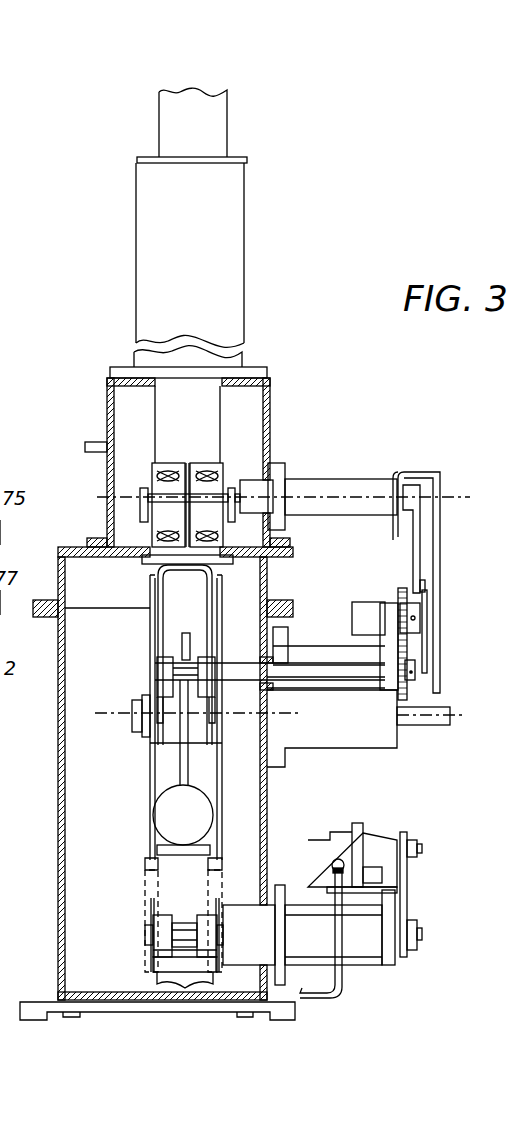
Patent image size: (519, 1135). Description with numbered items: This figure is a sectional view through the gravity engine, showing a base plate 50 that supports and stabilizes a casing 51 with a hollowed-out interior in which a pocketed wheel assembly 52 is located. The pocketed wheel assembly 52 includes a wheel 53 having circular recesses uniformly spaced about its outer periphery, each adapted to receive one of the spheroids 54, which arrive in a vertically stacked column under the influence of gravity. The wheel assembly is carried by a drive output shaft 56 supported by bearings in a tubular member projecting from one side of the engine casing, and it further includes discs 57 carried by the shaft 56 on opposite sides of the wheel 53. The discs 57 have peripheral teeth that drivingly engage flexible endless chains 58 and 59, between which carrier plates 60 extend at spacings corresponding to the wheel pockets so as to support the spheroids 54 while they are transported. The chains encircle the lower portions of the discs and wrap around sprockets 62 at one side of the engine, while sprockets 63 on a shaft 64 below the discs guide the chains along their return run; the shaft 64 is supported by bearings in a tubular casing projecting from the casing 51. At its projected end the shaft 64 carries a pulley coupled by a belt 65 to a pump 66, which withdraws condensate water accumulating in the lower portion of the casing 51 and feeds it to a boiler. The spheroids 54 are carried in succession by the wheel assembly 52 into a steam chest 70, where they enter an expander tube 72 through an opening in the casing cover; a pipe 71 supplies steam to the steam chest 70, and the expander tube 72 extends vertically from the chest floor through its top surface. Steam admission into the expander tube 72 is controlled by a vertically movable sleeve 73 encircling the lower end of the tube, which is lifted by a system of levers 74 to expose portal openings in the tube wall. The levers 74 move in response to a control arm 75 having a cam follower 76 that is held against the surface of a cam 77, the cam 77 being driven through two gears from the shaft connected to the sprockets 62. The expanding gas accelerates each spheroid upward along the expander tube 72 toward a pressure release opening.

The base plate 50 is at (38, 1003).
The casing 51 is at (265, 775).
The pocketed wheel assembly 52 is at (147, 757).
The wheel 53 is at (160, 652).
The spheroids 54 is at (200, 828).
The drive output shaft 56 is at (432, 726).
The discs 57 is at (150, 596).
The flexible endless chain 58 is at (145, 880).
The flexible endless chain 59 is at (222, 876).
The carrier plates 60 is at (186, 856).
The sprockets 62 is at (199, 658).
The sprockets 63 is at (150, 905).
The shaft 64 is at (185, 922).
The belt 65 is at (413, 890).
The pump 66 is at (330, 840).
The steam chest 70 is at (266, 436).
The pipe 71 is at (86, 442).
The expander tube 72 is at (221, 462).
The sleeve 73 is at (153, 470).
The levers 74 is at (224, 516).
The control arm 75 is at (422, 556).
The cam follower 76 is at (426, 586).
The cam 77 is at (430, 633).